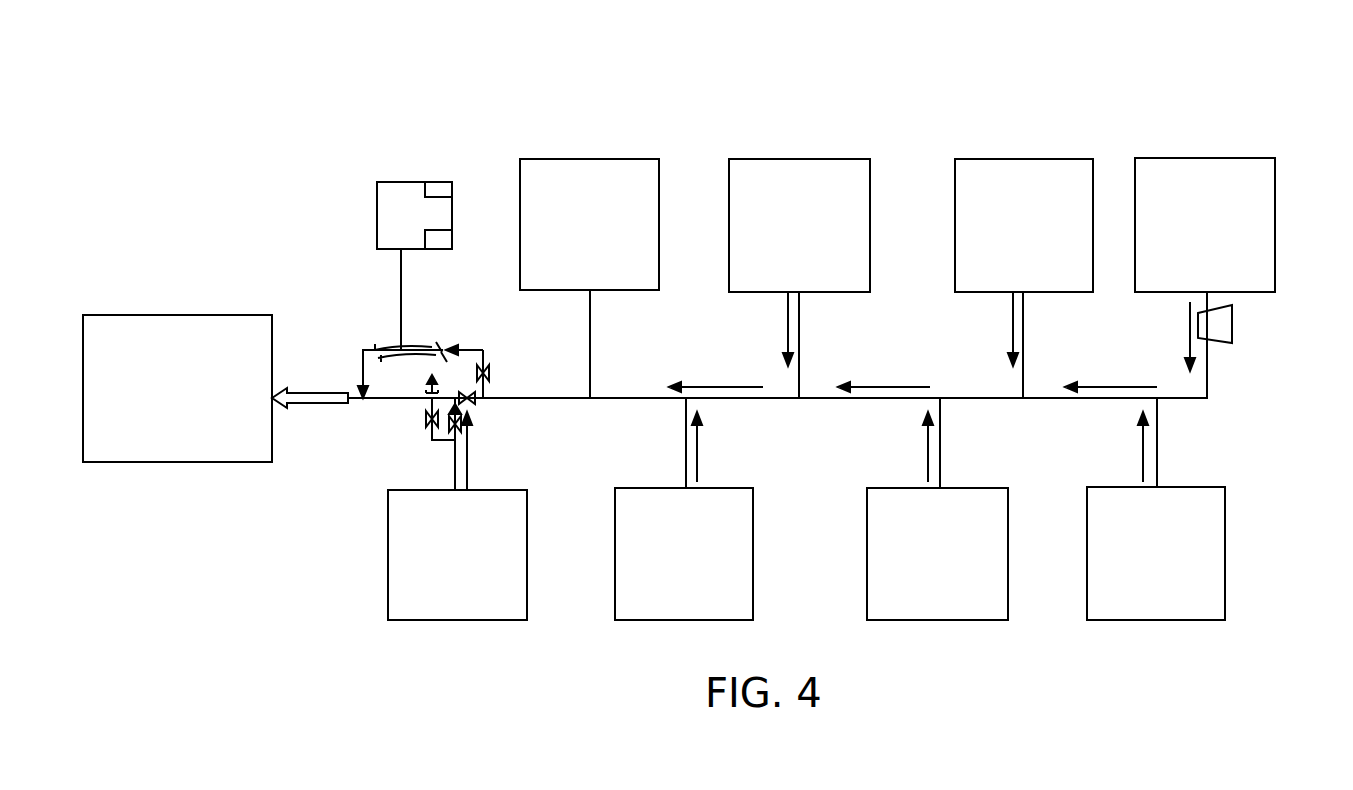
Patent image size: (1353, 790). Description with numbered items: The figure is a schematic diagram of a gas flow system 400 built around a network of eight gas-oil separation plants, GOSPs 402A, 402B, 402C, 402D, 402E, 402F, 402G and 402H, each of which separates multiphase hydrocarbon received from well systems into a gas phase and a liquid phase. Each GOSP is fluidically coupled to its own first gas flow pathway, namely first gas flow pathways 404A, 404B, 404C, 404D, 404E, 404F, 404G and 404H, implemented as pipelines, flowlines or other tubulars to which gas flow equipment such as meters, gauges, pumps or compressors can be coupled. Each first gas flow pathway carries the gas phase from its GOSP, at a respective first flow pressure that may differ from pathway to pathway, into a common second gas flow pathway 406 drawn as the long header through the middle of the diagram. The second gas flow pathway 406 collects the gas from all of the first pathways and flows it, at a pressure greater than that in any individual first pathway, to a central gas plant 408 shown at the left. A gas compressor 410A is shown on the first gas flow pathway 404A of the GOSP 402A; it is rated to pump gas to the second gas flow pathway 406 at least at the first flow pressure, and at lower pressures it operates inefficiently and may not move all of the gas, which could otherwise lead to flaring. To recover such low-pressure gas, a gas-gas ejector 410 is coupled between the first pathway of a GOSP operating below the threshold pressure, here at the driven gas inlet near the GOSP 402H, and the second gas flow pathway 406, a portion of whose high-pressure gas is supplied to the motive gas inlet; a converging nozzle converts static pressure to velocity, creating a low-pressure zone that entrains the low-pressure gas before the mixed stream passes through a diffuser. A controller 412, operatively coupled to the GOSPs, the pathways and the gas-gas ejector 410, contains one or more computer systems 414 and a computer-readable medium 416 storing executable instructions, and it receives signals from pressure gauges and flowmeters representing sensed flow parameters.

The gas flow system 400 is at (1126, 104).
The GOSP 402A is at (1240, 236).
The GOSP 402B is at (1192, 566).
The GOSP 402C is at (1058, 236).
The GOSP 402D is at (975, 566).
The GOSP 402E is at (833, 236).
The GOSP 402F is at (699, 566).
The GOSP 402G is at (626, 236).
The GOSP 402H is at (492, 566).
The first gas flow pathway 404A is at (1207, 380).
The first gas flow pathway 404B is at (1157, 444).
The first gas flow pathway 404C is at (1023, 340).
The first gas flow pathway 404D is at (940, 442).
The first gas flow pathway 404E is at (799, 340).
The first gas flow pathway 404F is at (686, 442).
The first gas flow pathway 404G is at (590, 340).
The first gas flow pathway 404H is at (455, 458).
The second gas flow pathway 406 is at (975, 400).
The central gas plant 408 is at (203, 400).
The gas-gas ejector 410 is at (379, 323).
The gas compressor 410A is at (1232, 325).
The controller 412 is at (438, 224).
The computer systems 414 is at (442, 186).
The computer-readable medium 416 is at (438, 246).